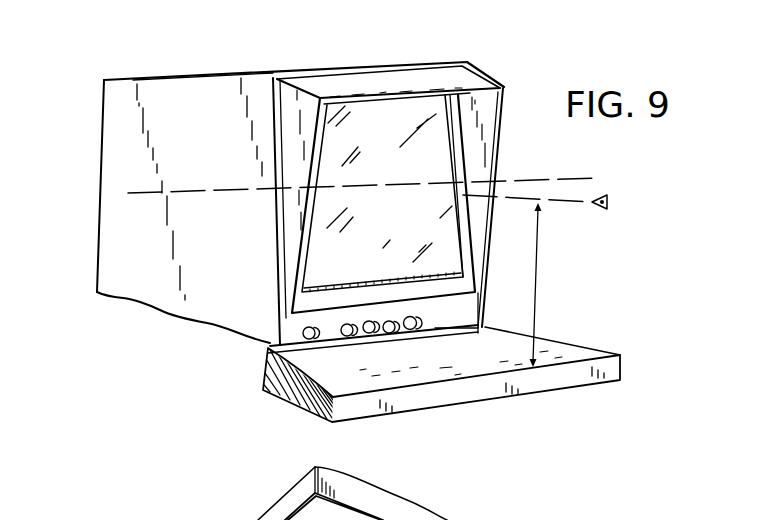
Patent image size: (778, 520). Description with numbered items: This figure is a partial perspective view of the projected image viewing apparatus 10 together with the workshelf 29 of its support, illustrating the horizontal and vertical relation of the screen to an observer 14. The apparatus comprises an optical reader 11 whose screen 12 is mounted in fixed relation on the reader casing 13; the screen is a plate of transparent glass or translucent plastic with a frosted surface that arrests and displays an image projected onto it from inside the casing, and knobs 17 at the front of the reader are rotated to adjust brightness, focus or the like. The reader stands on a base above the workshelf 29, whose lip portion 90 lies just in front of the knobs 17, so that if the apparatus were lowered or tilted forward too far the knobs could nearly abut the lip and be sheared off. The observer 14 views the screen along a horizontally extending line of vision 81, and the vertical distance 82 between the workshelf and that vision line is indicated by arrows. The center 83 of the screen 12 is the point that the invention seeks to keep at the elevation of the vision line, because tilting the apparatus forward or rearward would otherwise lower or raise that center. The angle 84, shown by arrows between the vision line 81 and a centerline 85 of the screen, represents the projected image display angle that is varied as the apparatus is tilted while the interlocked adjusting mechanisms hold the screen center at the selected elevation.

The projected image viewing apparatus 10 is at (144, 341).
The optical reader 11 is at (274, 63).
The screen 12 is at (391, 149).
The reader casing 13 is at (118, 99).
The observer 14 is at (608, 199).
The knobs 17 is at (350, 347).
The workshelf 29 is at (577, 345).
The line of vision 81 is at (587, 202).
The vertical distance 82 is at (540, 286).
The center of the screen 83 is at (373, 188).
The angle 84 is at (524, 177).
The centerline of the screen 85 is at (585, 179).
The lip portion 90 is at (471, 332).